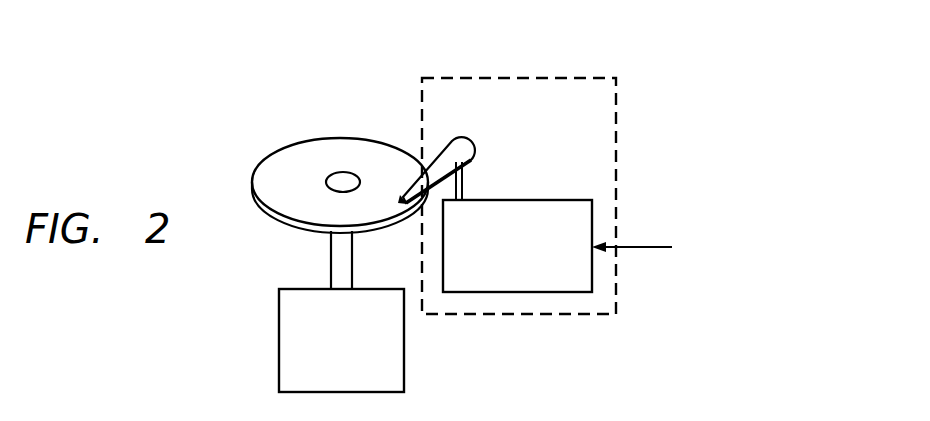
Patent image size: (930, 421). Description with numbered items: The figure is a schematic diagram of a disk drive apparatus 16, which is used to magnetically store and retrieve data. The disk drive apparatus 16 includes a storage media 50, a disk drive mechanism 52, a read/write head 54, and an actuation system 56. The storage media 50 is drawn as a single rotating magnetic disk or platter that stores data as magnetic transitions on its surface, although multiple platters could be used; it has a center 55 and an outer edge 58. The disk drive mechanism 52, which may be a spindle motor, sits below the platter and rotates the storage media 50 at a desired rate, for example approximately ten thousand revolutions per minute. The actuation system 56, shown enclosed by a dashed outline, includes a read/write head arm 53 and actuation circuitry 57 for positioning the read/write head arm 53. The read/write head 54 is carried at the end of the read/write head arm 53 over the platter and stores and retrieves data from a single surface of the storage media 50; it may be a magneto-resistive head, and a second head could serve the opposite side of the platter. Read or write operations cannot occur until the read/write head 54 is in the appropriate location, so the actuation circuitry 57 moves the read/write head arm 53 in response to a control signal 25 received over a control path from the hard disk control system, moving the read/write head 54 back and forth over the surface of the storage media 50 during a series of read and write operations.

The disk drive apparatus 16 is at (228, 100).
The storage media 50 is at (252, 182).
The outer edge 58 is at (270, 219).
The center 55 is at (343, 172).
The disk drive mechanism 52 is at (279, 324).
The actuation system 56 is at (672, 82).
The actuation circuitry 57 is at (515, 200).
The read/write head arm 53 is at (458, 148).
The read/write head 54 is at (405, 206).
The control signal 25 is at (638, 246).